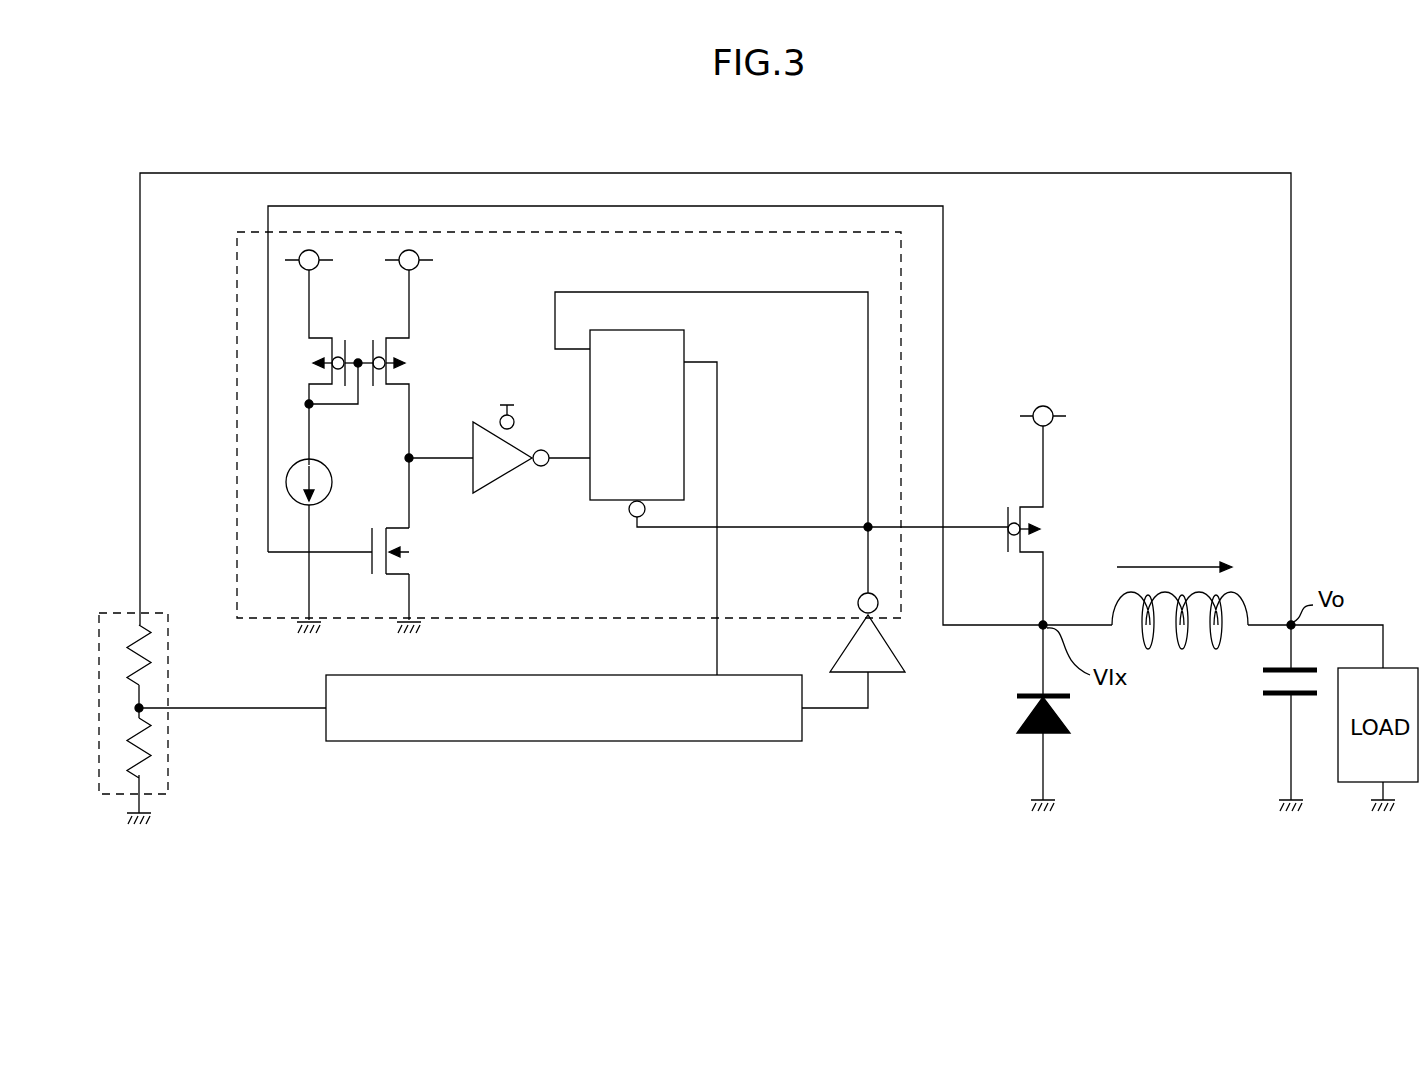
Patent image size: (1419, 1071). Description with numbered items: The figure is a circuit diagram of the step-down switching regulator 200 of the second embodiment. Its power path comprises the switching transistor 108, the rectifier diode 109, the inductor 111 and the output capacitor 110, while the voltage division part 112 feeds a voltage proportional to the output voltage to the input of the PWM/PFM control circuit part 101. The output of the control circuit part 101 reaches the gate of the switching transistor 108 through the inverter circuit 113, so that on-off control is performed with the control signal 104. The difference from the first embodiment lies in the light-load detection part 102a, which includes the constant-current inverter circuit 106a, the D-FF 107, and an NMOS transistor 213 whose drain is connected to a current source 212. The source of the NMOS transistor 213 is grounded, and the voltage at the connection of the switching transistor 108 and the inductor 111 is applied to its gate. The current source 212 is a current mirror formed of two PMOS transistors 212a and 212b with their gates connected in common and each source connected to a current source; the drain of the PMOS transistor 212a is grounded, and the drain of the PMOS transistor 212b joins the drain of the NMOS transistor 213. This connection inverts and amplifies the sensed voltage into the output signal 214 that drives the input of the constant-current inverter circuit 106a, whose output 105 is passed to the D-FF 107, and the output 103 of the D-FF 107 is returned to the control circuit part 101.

The switching regulator 200 is at (1291, 126).
The PWM/PFM control circuit part 101 is at (562, 742).
The light-load detection part 102a is at (540, 620).
The flip-flop output signal line 103 is at (718, 640).
The control signal 104 is at (972, 528).
The inverter output signal line 105 is at (570, 462).
The constant-current inverter circuit 106a is at (520, 427).
The D-FF 107 is at (684, 333).
The switching transistor 108 is at (1048, 518).
The rectifier diode 109 is at (1068, 735).
The output capacitor 110 is at (1262, 703).
The inductor 111 is at (1250, 598).
The voltage division part 112 is at (113, 610).
The inverter circuit 113 is at (905, 655).
The current source 212 is at (334, 389).
The PMOS transistor 212a is at (318, 363).
The PMOS transistor 212b is at (392, 372).
The NMOS transistor 213 is at (415, 565).
The output signal 214 is at (443, 462).